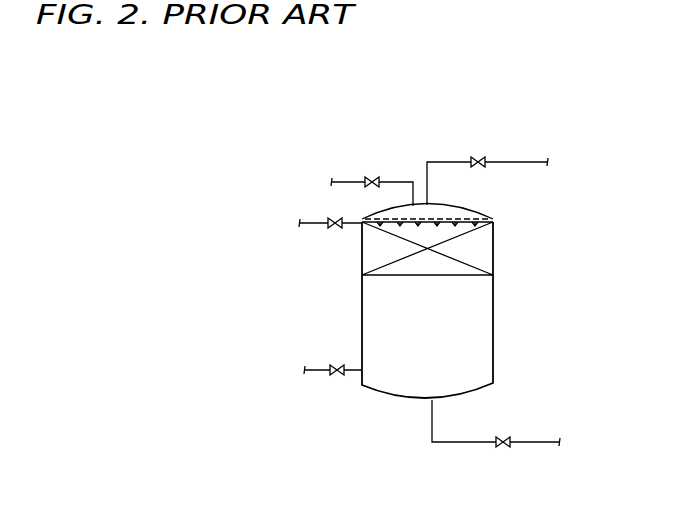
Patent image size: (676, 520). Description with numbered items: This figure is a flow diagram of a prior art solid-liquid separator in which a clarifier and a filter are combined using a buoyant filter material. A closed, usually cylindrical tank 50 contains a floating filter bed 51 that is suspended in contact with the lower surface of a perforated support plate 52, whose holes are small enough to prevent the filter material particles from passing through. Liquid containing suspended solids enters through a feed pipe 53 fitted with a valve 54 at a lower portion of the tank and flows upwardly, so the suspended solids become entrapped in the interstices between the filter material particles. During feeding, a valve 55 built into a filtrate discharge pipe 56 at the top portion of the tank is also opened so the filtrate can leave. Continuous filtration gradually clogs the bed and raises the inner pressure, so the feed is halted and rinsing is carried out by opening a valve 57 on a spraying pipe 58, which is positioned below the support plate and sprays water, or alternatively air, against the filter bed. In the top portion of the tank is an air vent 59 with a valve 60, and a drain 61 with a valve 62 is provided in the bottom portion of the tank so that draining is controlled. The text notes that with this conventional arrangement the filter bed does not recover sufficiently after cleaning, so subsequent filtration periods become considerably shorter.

The tank 50 is at (444, 349).
The floating filter bed 51 is at (372, 255).
The perforated support plate 52 is at (462, 217).
The feed pipe 53 is at (352, 372).
The valve 54 is at (336, 366).
The valve 55 is at (480, 158).
The filtrate discharge pipe 56 is at (448, 162).
The valve 57 is at (330, 219).
The spraying pipe 58 is at (348, 221).
The air vent 59 is at (395, 182).
The valve 60 is at (370, 177).
The drain 61 is at (465, 441).
The valve 62 is at (505, 447).